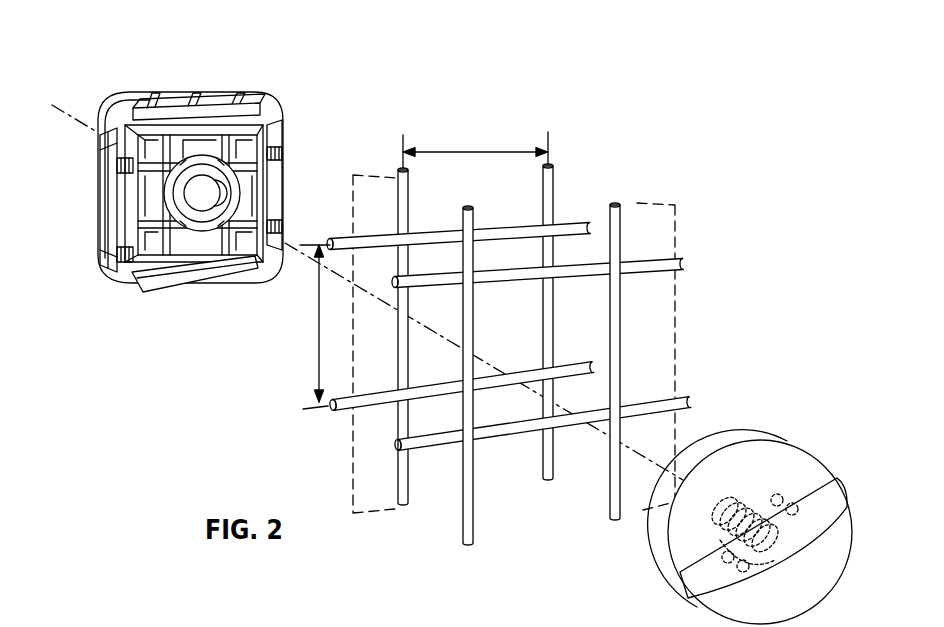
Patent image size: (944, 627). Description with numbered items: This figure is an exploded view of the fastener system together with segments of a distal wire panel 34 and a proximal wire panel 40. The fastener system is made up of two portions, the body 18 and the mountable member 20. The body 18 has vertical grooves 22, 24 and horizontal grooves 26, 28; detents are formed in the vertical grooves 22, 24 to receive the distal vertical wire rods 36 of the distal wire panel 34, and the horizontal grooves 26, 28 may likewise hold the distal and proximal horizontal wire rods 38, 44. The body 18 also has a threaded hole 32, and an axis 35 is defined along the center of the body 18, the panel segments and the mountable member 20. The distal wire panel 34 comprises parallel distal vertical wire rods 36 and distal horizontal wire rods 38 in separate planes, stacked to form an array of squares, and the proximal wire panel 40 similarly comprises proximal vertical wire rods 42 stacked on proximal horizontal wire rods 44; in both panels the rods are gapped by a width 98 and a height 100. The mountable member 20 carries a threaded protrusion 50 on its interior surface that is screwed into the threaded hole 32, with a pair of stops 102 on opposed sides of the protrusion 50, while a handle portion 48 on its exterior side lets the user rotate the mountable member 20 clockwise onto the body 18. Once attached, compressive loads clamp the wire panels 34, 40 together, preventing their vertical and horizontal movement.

The body 18 is at (125, 103).
The mountable member 20 is at (786, 440).
The vertical groove 22 is at (120, 180).
The vertical groove 24 is at (267, 173).
The horizontal groove 26 is at (221, 116).
The horizontal groove 28 is at (197, 268).
The threaded hole 32 is at (203, 188).
The distal wire panel 34 is at (348, 447).
The axis 35 is at (683, 480).
The distal vertical wire rods 36 is at (554, 172).
The distal horizontal wire rods 38 is at (573, 227).
The proximal wire panel 40 is at (677, 229).
The proximal vertical wire rods 42 is at (620, 223).
The proximal horizontal wire rods 44 is at (647, 268).
The handle portion 48 is at (832, 500).
The threaded protrusion 50 is at (712, 526).
The width 98 is at (471, 150).
The height 100 is at (318, 337).
The pair of stops 102 is at (683, 585).